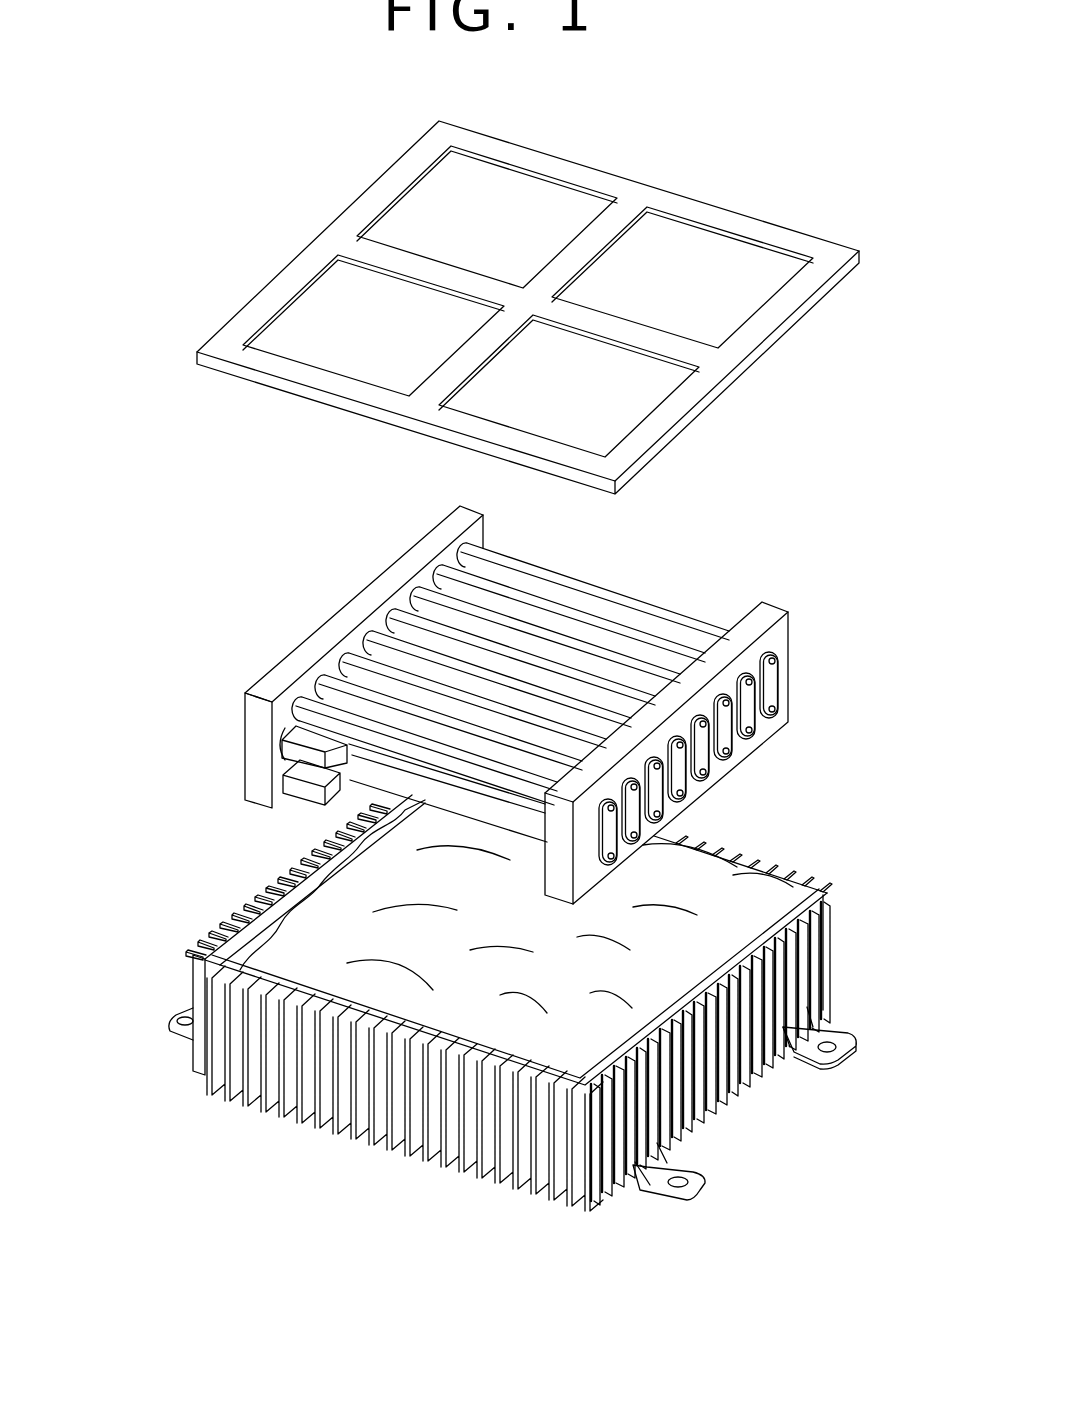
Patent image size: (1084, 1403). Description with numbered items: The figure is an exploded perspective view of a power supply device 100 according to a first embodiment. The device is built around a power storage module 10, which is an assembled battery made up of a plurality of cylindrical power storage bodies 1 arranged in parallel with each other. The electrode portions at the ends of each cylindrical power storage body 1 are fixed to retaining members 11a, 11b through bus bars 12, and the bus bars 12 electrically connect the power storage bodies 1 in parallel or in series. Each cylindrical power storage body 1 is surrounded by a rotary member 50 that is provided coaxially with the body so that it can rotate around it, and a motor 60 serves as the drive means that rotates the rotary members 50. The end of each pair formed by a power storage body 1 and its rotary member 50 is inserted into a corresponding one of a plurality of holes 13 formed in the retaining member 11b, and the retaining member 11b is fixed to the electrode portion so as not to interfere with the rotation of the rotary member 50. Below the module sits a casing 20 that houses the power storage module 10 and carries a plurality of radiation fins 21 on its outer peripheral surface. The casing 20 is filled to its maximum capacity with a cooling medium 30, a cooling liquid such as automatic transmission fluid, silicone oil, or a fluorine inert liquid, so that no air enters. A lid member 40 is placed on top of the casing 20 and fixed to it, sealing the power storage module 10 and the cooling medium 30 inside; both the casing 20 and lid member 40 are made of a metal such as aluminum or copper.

The power supply device 100 is at (160, 497).
The lid member 40 is at (737, 205).
The power storage module 10 is at (705, 607).
The retaining member 11a is at (717, 711).
The retaining member 11b is at (393, 565).
The bus bar 12 is at (778, 686).
The hole 13 is at (333, 657).
The cylindrical power storage body 1 is at (315, 713).
The rotary member 50 is at (623, 602).
The motor 60 is at (299, 803).
The casing 20 is at (512, 1054).
The radiation fin 21 is at (430, 1150).
The cooling medium 30 is at (720, 910).